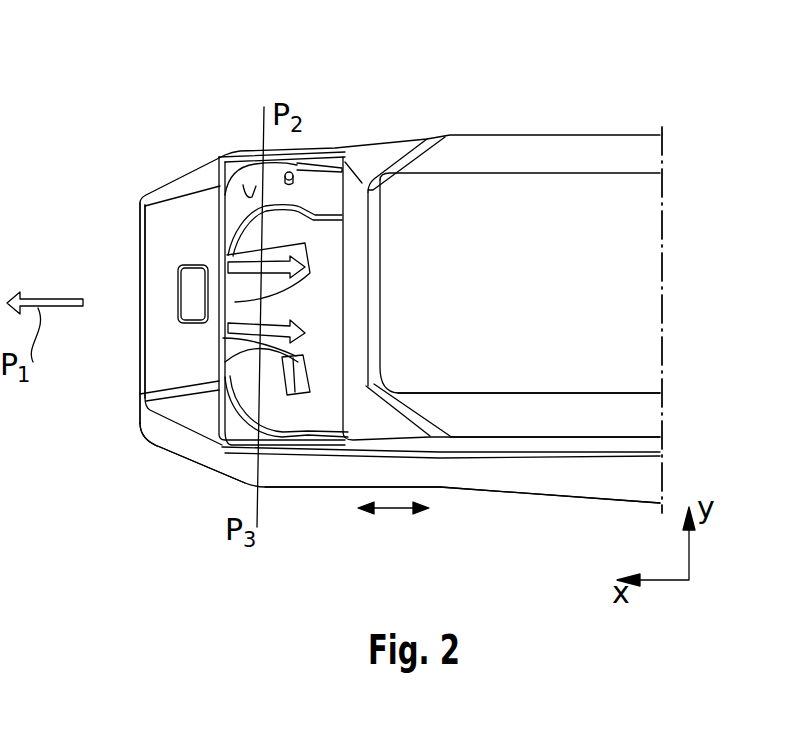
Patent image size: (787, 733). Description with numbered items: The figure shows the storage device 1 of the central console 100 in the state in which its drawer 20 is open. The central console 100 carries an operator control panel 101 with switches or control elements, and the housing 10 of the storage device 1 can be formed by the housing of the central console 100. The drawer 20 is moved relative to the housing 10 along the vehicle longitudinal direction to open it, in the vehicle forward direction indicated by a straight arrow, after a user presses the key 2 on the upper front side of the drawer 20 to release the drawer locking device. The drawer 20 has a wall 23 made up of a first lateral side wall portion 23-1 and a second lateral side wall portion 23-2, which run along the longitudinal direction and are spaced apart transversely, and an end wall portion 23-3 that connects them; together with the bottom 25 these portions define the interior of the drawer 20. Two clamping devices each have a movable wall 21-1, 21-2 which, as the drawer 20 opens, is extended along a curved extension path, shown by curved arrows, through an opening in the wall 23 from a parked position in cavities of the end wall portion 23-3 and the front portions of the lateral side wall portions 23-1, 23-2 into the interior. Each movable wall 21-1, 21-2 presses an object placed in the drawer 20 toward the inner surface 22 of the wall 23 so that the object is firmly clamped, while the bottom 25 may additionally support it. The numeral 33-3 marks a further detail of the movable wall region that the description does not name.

The storage device 1 is at (100, 495).
The key 2 is at (180, 297).
The housing 10 is at (647, 423).
The drawer 20 is at (313, 490).
The movable wall 21-1 is at (245, 359).
The movable wall 21-2 is at (230, 260).
The inner surface 22 is at (221, 190).
The wall 23 is at (187, 420).
The first lateral side wall portion 23-1 is at (357, 477).
The second lateral side wall portion 23-2 is at (328, 165).
The end wall portion 23-3 is at (158, 333).
The bottom 25 is at (327, 250).
The bearing pin 33-3 is at (291, 172).
The central console 100 is at (684, 120).
The operator control panel 101 is at (647, 237).